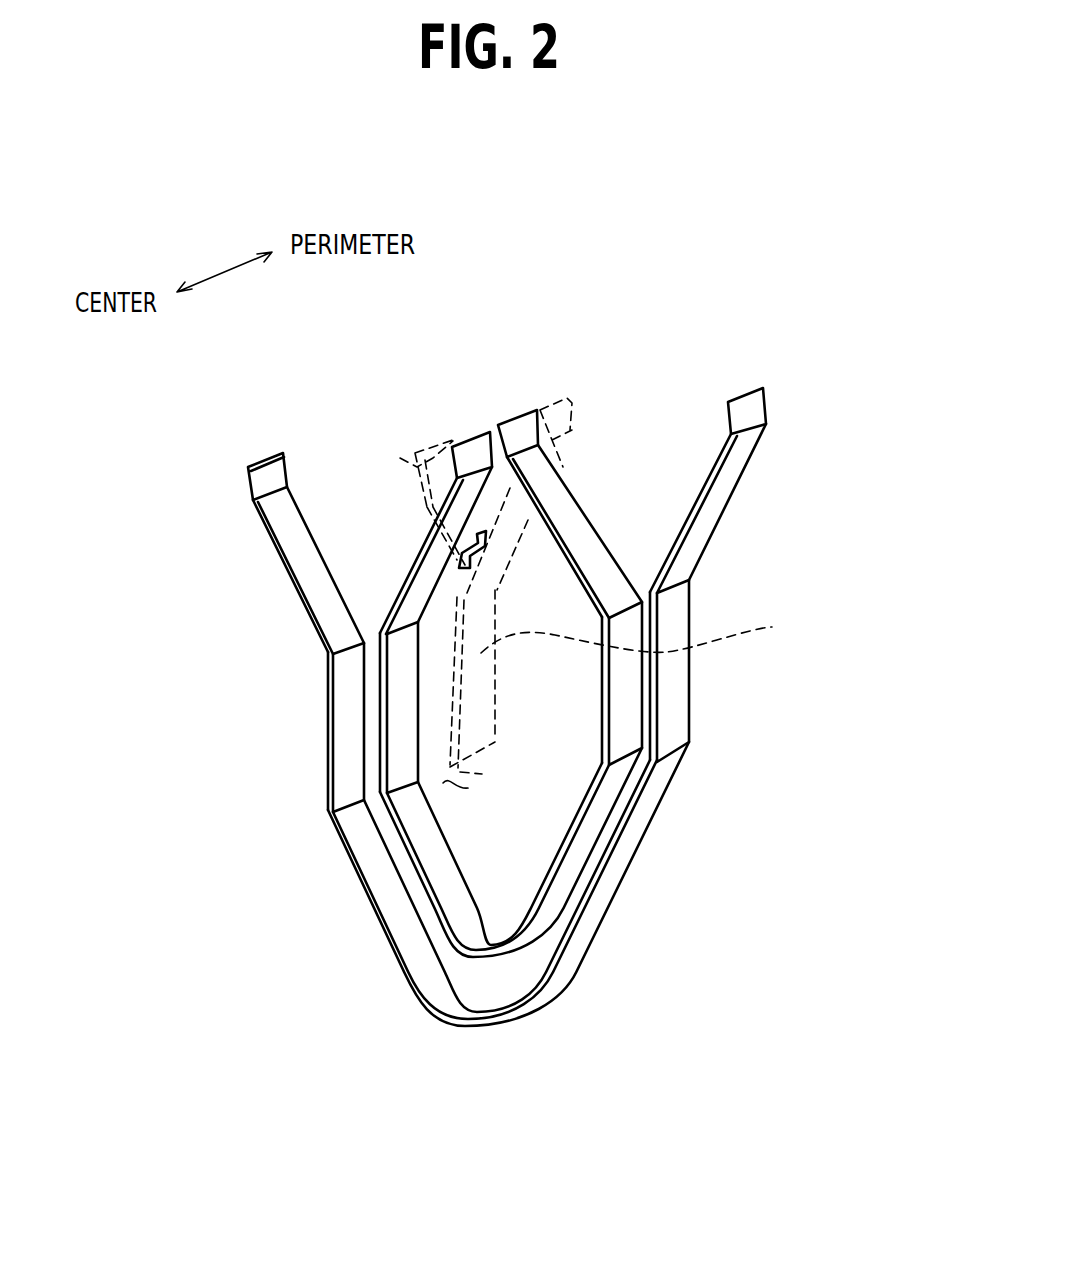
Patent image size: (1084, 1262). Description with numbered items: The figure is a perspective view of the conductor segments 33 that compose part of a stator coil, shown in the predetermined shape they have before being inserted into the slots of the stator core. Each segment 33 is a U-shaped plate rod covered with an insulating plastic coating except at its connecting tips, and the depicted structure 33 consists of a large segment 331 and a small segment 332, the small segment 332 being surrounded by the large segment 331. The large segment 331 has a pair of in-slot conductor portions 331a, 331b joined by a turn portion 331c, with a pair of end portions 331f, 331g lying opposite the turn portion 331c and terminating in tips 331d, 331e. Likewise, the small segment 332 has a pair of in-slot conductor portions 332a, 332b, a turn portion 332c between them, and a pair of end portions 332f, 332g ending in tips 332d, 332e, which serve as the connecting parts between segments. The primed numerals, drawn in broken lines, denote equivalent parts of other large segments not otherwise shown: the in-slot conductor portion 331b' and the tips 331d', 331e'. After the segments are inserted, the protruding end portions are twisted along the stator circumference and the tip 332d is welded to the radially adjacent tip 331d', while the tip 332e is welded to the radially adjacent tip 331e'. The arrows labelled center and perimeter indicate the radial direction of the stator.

The conductor segment 33 is at (364, 996).
The large segment 331 is at (750, 536).
The in-slot conductor portion 331a is at (345, 683).
The in-slot conductor portion 331b is at (757, 671).
The in-slot conductor portion (of another large segment) 331b' is at (648, 659).
The turn portion 331c is at (448, 1007).
The tip 331d is at (189, 502).
The tip (of another large segment) 331d' is at (370, 452).
The tip 331e is at (815, 388).
The tip (of another large segment) 331e' is at (562, 460).
The end portion 331f is at (285, 540).
The end portion 331g is at (733, 466).
The small segment 332 is at (614, 524).
The in-slot conductor portion 332a is at (398, 728).
The in-slot conductor portion 332b is at (625, 742).
The turn portion 332c is at (537, 937).
The tip 332d is at (480, 437).
The tip 332e is at (523, 427).
The end portion 332f is at (428, 576).
The end portion 332g is at (573, 520).